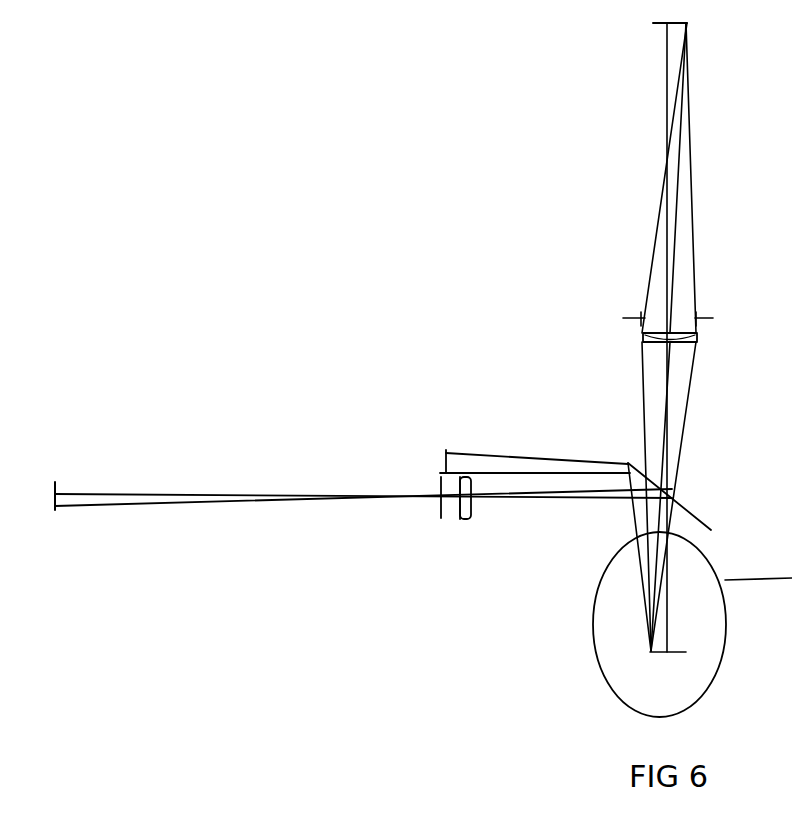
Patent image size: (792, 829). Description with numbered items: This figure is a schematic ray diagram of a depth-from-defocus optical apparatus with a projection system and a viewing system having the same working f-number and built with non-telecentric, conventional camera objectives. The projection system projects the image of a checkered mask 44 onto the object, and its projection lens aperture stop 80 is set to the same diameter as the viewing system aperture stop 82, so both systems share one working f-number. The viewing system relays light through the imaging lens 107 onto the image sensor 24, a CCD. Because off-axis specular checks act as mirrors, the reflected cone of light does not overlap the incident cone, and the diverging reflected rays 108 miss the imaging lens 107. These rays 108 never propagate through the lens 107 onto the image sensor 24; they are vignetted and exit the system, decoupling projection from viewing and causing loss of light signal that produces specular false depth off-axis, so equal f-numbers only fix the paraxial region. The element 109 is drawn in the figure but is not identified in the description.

The image sensor (CCD) 24 is at (52, 488).
The checkered mask 44 is at (653, 25).
The projection lens aperture stop 80 is at (703, 315).
The viewing system aperture stop 82 is at (440, 505).
The imaging lens 107 is at (471, 513).
The reflected rays 108 is at (446, 452).
The lens 109 is at (688, 343).